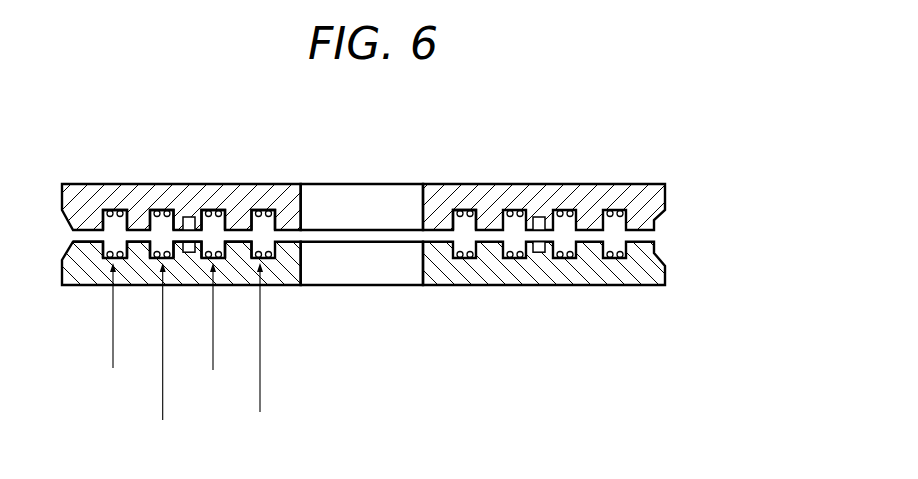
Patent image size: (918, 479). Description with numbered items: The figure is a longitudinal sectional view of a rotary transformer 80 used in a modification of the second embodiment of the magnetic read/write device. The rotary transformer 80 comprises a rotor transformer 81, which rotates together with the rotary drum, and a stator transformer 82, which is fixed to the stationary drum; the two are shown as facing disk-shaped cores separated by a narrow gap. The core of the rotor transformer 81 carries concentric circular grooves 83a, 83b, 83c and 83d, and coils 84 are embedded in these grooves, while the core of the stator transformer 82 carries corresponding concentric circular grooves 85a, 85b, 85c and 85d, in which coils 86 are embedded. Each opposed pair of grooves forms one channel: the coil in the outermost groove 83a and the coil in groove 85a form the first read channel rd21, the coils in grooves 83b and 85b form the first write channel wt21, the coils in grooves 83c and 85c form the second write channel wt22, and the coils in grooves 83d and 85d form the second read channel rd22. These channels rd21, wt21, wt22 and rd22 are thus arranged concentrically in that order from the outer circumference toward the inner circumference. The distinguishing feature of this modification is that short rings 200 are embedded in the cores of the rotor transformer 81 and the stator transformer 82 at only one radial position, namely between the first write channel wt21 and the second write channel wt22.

The rotary transformer 80 is at (431, 234).
The rotor transformer 81 is at (663, 191).
The stator transformer 82 is at (668, 275).
The circular groove 83a is at (115, 207).
The circular groove 83b is at (163, 207).
The circular groove 83c is at (213, 207).
The circular groove 83d is at (263, 207).
The coil 84 is at (458, 222).
The circular groove 85a is at (93, 263).
The circular groove 85b is at (150, 256).
The circular groove 85c is at (193, 252).
The circular groove 85d is at (243, 254).
The coil 86 is at (608, 255).
The short ring 200 is at (540, 216).
The first read channel rd21 is at (113, 330).
The first write channel wt21 is at (164, 356).
The second write channel wt22 is at (217, 330).
The second read channel rd22 is at (276, 356).